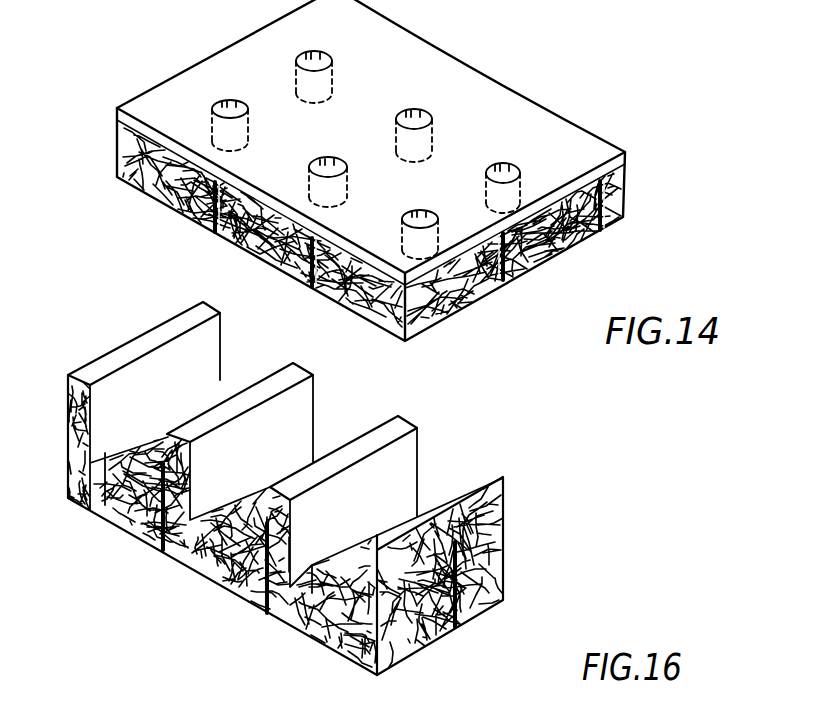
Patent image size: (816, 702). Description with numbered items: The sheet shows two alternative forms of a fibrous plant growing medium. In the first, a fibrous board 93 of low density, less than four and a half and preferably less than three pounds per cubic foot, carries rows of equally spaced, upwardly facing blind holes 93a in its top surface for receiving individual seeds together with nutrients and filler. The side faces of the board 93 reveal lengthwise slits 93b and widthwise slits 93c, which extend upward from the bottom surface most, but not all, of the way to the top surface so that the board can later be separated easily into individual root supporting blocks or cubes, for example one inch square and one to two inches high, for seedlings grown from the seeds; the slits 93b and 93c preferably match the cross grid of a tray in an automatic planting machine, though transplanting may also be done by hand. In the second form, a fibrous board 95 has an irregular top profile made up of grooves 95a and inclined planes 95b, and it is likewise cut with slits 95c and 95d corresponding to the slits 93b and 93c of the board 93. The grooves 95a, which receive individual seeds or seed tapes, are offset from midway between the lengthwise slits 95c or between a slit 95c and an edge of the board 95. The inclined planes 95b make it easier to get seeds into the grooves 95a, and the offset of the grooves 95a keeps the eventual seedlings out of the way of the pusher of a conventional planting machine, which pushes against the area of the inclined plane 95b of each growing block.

In FIG. 14, the fibrous board 93 is at (210, 57).
In FIG. 14, the blind holes 93a is at (296, 60).
In FIG. 14, the lengthwise slits 93b is at (503, 283).
In FIG. 14, the widthwise slits 93c is at (213, 213).
In FIG. 16, the fibrous board 95 is at (122, 346).
In FIG. 16, the grooves 95a is at (95, 508).
In FIG. 16, the inclined planes 95b is at (242, 385).
In FIG. 16, the lengthwise slits 95c is at (440, 635).
In FIG. 16, the slits 95d is at (163, 550).